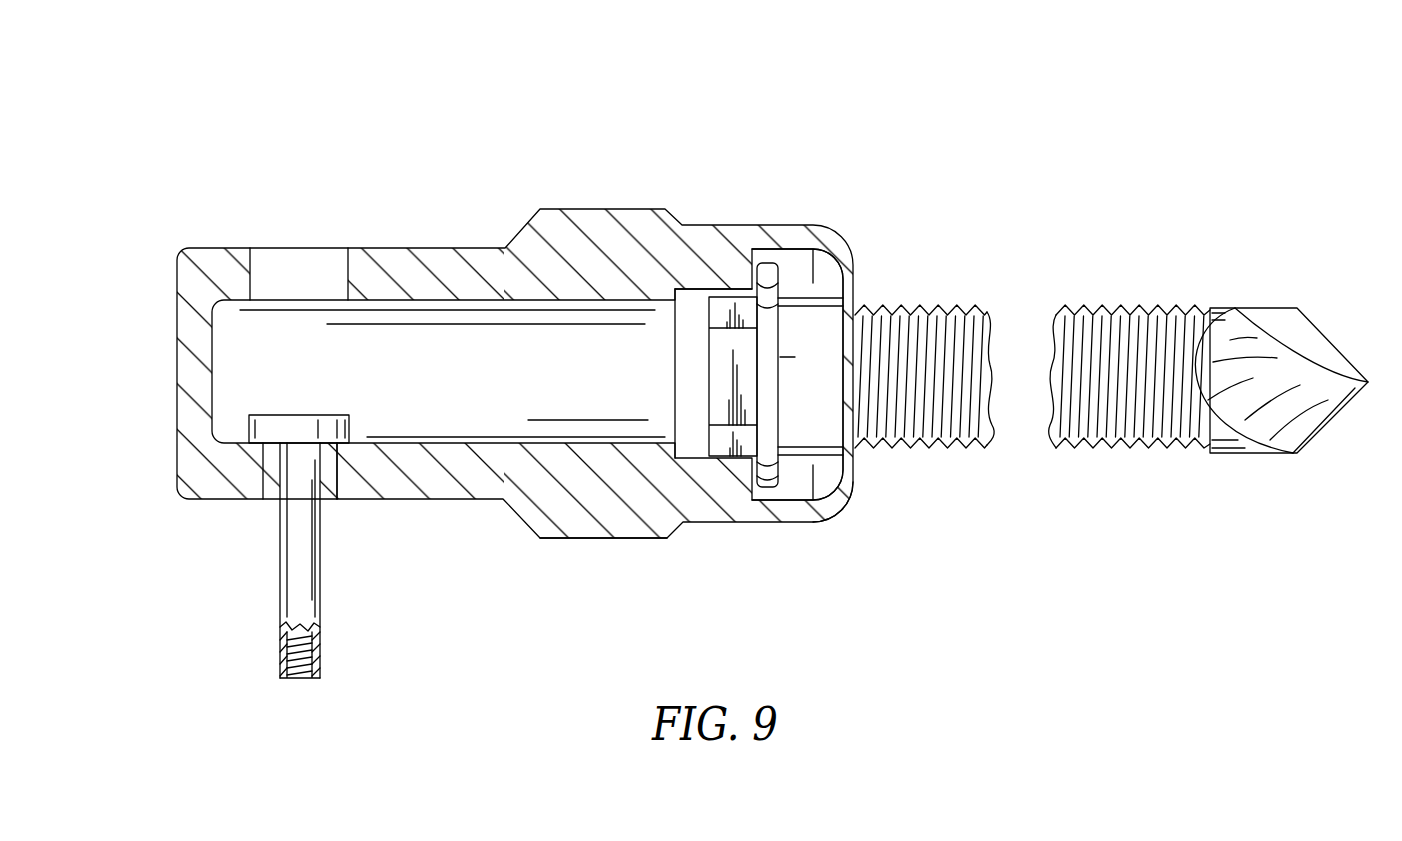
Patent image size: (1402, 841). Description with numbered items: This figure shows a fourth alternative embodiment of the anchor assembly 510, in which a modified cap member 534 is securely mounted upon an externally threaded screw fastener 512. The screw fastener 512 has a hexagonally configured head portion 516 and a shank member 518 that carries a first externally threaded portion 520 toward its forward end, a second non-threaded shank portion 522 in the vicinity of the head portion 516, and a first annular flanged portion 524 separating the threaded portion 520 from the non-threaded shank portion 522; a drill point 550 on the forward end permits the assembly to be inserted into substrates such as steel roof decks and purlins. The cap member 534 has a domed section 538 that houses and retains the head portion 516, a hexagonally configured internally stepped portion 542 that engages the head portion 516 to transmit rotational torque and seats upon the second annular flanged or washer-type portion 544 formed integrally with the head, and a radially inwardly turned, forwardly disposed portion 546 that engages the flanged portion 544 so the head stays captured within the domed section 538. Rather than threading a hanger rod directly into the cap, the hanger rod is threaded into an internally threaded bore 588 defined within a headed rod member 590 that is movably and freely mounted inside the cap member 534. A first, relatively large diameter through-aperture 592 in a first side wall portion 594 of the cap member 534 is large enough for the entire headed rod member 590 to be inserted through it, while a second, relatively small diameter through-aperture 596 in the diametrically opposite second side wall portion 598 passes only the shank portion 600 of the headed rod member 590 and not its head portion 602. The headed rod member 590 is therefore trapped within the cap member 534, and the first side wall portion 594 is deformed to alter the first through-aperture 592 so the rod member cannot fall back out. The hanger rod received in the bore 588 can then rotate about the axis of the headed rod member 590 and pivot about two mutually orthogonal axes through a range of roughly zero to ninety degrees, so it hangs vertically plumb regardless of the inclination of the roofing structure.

The anchor assembly 510 is at (967, 125).
The externally threaded screw fastener 512 is at (1132, 445).
The head portion 516 is at (718, 363).
The shank member 518 is at (992, 383).
The first externally threaded portion 520 is at (1090, 317).
The second non-threaded shank portion 522 is at (790, 430).
The first annular flanged portion 524 is at (847, 385).
The modified cap member 534 is at (595, 508).
The domed section 538 is at (825, 510).
The hexagonally configured internally stepped portion 542 is at (740, 272).
The second annular flanged portion 544 is at (768, 282).
The radially inwardly turned forwardly disposed portion 546 is at (850, 246).
The drill point 550 is at (1303, 397).
The internally threaded bore 588 is at (300, 660).
The headed rod member 590 is at (280, 540).
The first relatively large diameter through-aperture 592 is at (298, 272).
The first side wall portion 594 is at (405, 263).
The second relatively small diameter through-aperture 596 is at (327, 472).
The second side wall portion 598 is at (398, 480).
The shank portion 600 is at (298, 595).
The head portion 602 is at (287, 427).